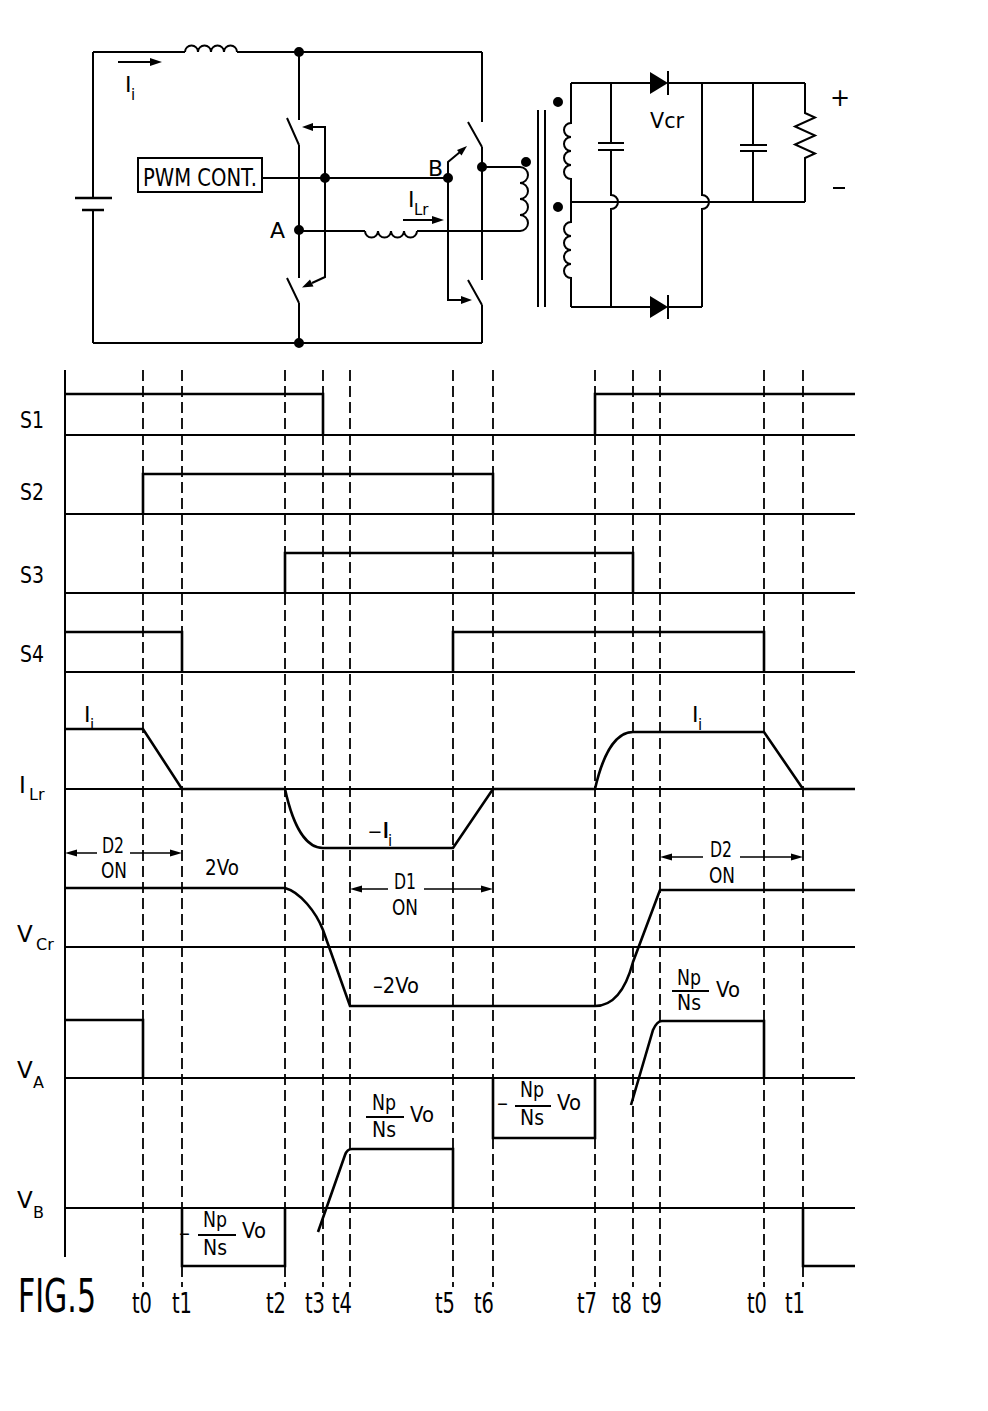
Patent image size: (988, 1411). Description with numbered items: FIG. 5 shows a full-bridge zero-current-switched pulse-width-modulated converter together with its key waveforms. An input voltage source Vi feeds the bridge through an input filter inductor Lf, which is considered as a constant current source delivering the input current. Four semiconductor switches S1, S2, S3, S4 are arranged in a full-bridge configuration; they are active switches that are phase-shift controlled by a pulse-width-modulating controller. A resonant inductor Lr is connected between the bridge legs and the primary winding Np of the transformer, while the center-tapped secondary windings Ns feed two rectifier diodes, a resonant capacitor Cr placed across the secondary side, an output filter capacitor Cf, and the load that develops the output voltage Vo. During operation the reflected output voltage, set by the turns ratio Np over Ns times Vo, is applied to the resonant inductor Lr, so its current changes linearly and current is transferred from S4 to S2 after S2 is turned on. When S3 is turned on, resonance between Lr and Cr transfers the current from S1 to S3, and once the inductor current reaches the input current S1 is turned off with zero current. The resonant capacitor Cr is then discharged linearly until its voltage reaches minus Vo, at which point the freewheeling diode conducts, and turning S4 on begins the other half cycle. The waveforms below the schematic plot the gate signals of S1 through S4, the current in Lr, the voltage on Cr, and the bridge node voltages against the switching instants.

The input voltage source Vi is at (84, 197).
The input filter inductor Lf is at (211, 32).
The semiconductor switch S1 is at (278, 141).
The semiconductor switch S2 is at (278, 286).
The semiconductor switch S3 is at (455, 109).
The semiconductor switch S4 is at (448, 255).
The resonant inductor Lr is at (391, 220).
The transformer primary winding Np is at (507, 199).
The transformer secondary winding Ns is at (585, 195).
The resonant capacitor Cr is at (619, 195).
The output filter capacitor Cf is at (761, 142).
The output voltage Vo is at (823, 142).